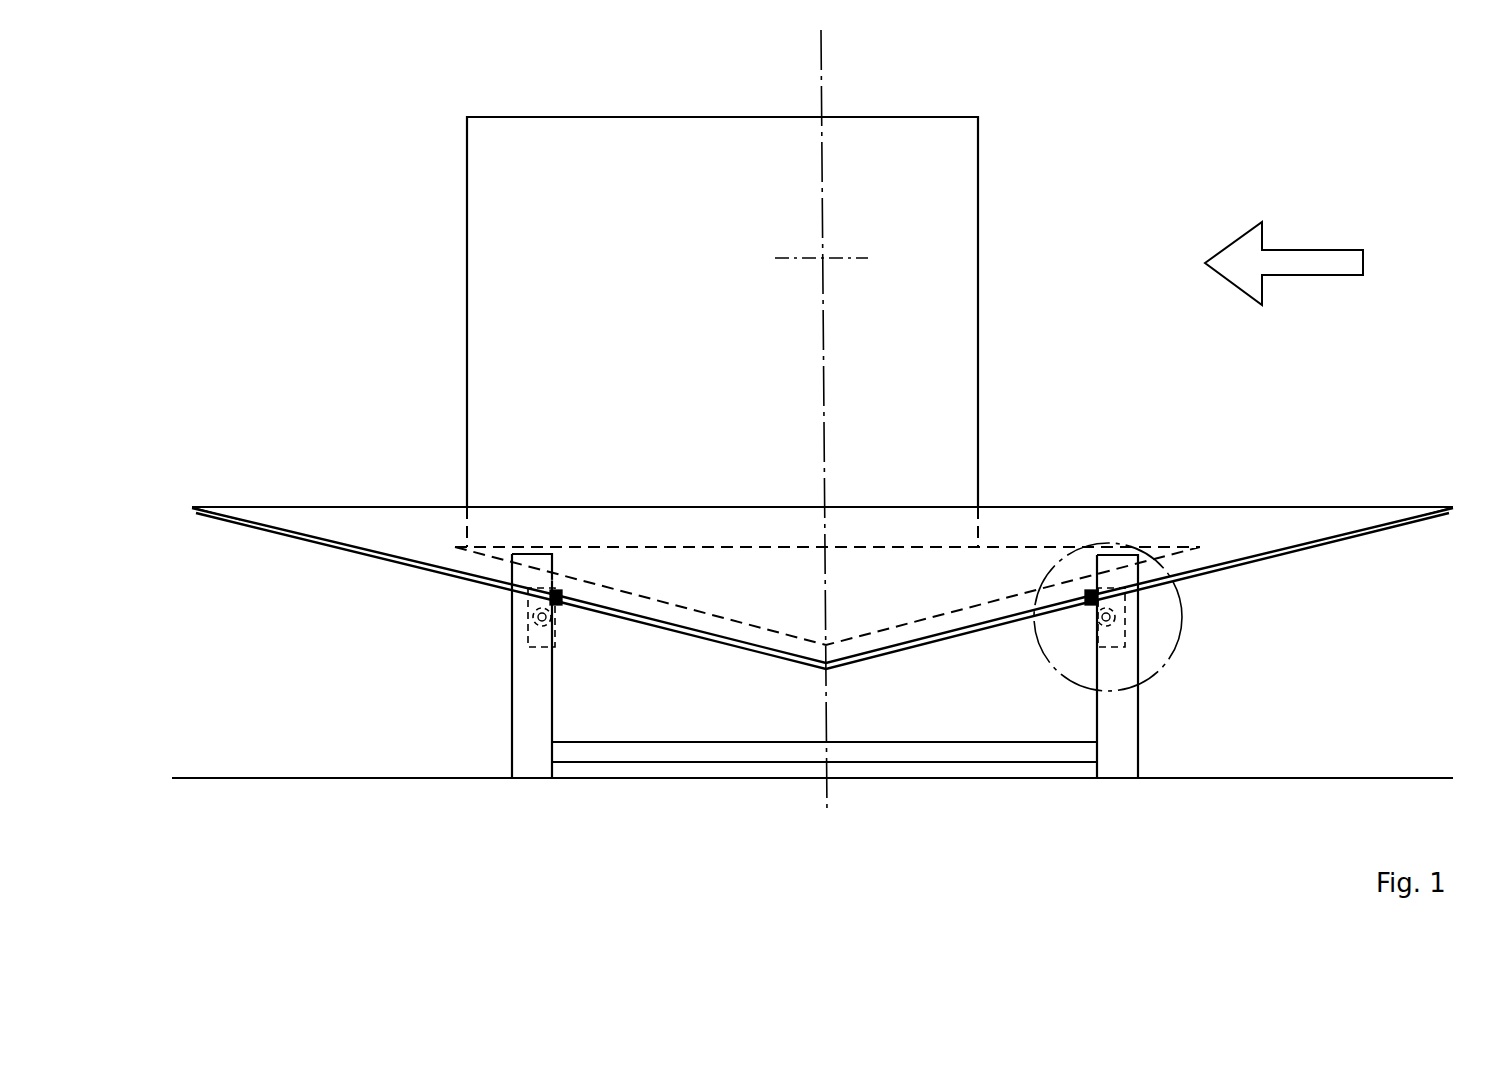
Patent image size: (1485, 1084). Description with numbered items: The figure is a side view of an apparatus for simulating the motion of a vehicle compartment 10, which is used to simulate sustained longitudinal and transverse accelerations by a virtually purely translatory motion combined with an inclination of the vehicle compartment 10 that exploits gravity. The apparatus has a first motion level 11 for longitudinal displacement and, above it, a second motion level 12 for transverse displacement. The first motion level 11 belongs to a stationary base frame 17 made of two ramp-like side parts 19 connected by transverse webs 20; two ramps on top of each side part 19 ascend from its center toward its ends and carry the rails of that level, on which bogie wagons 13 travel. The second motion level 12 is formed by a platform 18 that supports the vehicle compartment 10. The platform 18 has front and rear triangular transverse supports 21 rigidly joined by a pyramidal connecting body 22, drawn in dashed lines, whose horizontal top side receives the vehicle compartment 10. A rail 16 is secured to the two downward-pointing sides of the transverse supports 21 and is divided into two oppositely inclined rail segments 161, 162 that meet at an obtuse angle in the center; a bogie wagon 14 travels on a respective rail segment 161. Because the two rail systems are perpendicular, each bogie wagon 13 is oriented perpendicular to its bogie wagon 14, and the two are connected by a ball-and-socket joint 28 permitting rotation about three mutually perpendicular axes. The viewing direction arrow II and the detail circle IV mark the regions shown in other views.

The vehicle compartment 10 is at (642, 319).
The first motion level 11 is at (560, 656).
The second motion level 12 is at (568, 580).
The bogie wagon 13 is at (535, 645).
The bogie wagon 14 is at (556, 592).
The rail 16 is at (410, 566).
The rail segment 161 is at (270, 535).
The rail segment 162 is at (1378, 533).
The base frame 17 is at (688, 766).
The platform 18 is at (1015, 505).
The side part 19 is at (528, 727).
The transverse web 20 is at (770, 746).
The transverse support 21 is at (395, 522).
The connecting body 22 is at (917, 547).
The ball-and-socket joint 28 is at (560, 622).
The view direction arrow II is at (1321, 263).
The detail circle IV is at (1183, 613).